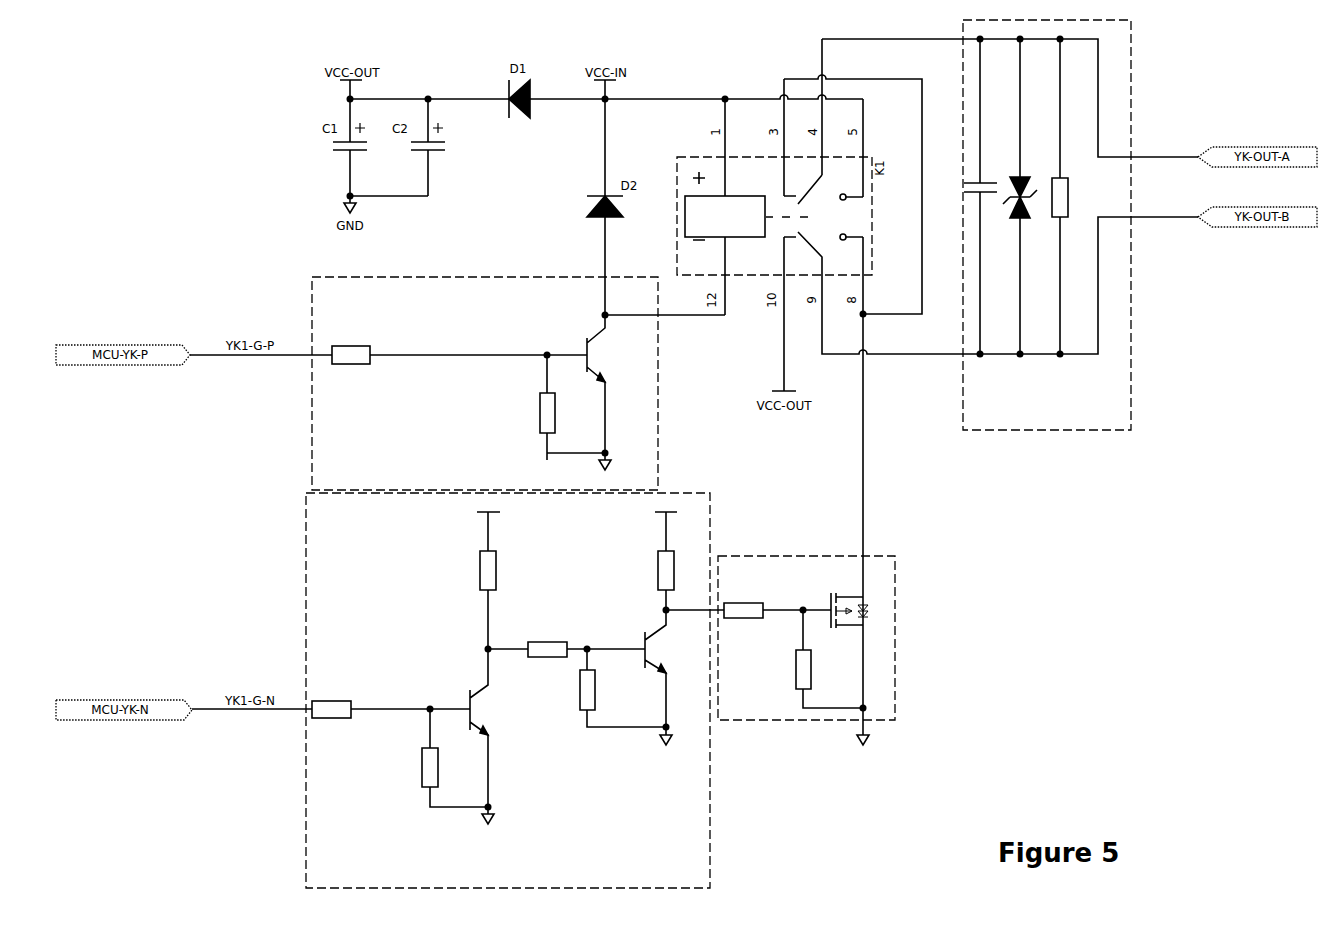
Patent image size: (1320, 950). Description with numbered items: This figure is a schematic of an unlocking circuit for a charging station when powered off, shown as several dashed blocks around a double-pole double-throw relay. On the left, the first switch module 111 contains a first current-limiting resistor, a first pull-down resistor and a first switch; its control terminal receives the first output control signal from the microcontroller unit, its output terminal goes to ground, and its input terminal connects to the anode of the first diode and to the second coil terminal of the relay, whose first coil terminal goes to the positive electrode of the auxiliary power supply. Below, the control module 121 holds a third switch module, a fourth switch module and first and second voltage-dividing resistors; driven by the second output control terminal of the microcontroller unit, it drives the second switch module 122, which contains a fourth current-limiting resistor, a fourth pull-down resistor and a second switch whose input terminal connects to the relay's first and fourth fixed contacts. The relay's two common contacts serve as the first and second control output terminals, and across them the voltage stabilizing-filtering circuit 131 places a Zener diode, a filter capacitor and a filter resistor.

The first switch module 111 is at (483, 277).
The control module 121 is at (306, 783).
The second switch module 122 is at (895, 637).
The voltage stabilizing-filtering circuit 131 is at (1133, 88).